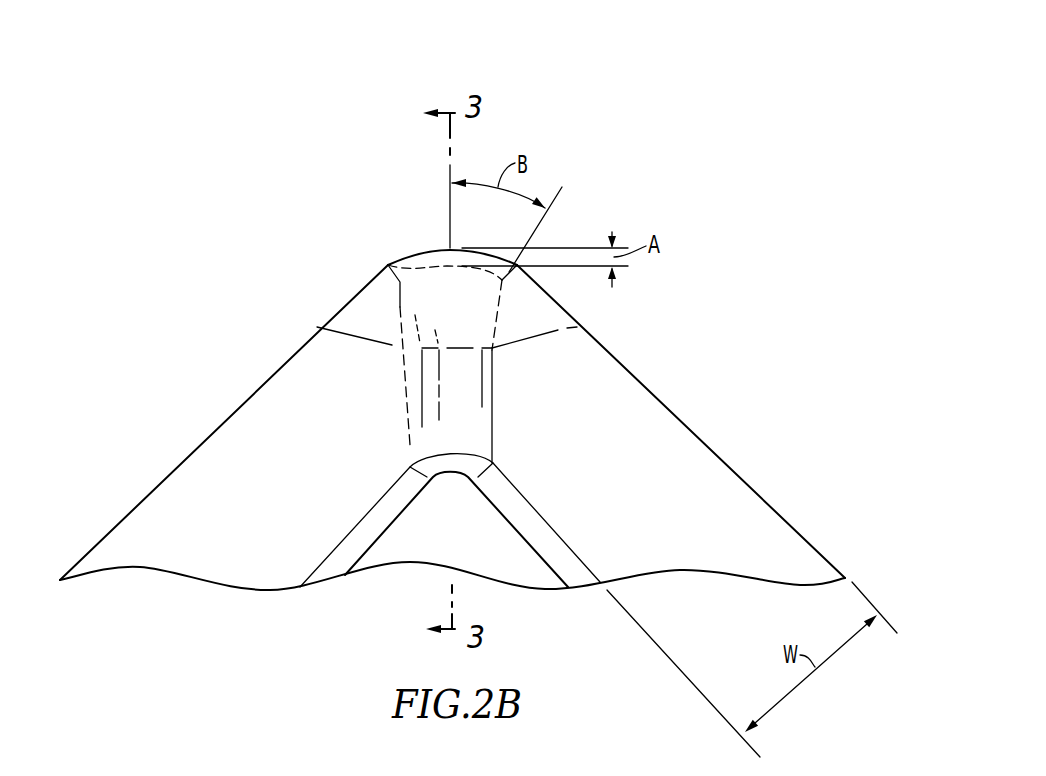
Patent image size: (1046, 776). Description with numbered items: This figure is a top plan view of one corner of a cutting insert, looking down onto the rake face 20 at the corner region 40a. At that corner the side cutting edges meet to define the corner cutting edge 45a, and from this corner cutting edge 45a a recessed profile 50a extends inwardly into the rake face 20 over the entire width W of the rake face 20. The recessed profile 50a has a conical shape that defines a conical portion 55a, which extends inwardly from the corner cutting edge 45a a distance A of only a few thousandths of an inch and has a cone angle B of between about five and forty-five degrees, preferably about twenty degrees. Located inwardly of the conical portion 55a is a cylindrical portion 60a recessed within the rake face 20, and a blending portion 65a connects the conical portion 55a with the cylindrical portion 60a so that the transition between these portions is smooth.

The rake face 20 is at (647, 417).
The corner region 40a is at (325, 276).
The corner cutting edge 45a is at (437, 247).
The recessed profile 50a is at (388, 263).
The conical portion 55a is at (427, 260).
The blending portion 65a is at (487, 308).
The cylindrical portion 60a is at (482, 407).